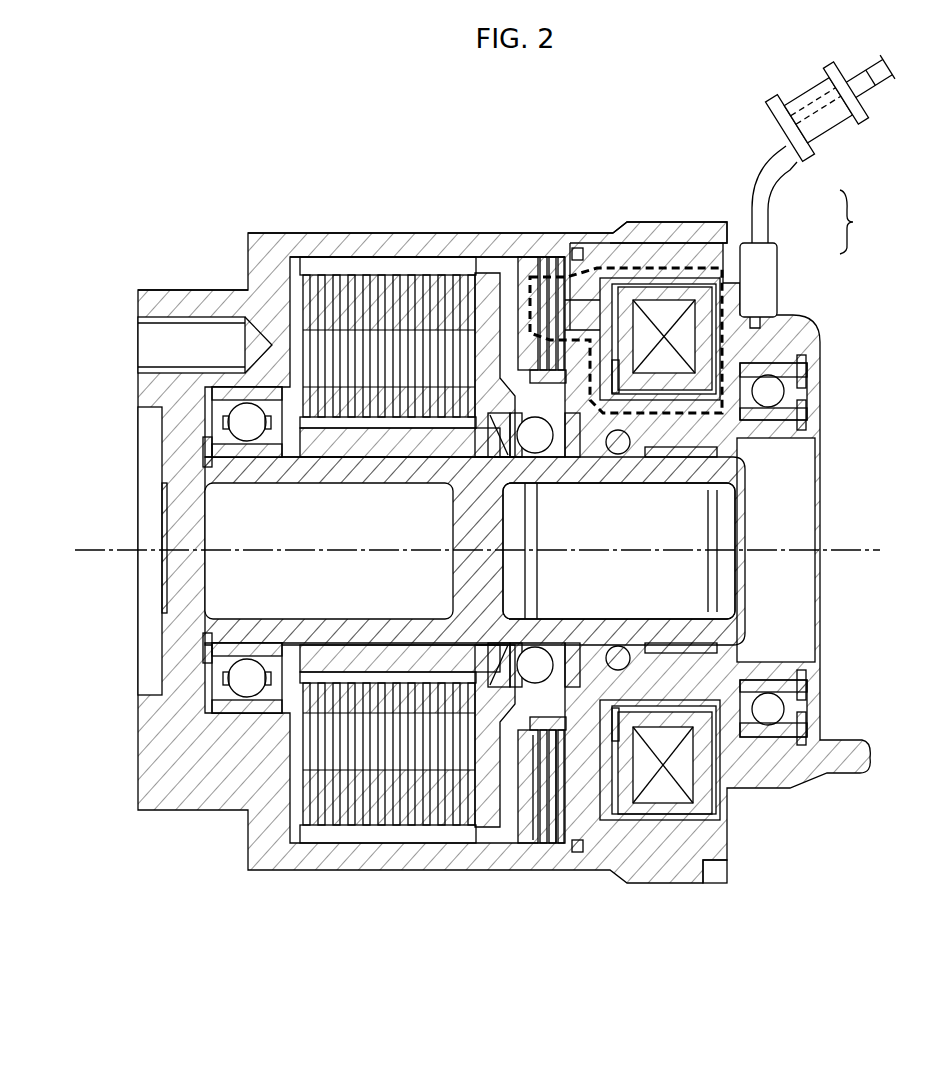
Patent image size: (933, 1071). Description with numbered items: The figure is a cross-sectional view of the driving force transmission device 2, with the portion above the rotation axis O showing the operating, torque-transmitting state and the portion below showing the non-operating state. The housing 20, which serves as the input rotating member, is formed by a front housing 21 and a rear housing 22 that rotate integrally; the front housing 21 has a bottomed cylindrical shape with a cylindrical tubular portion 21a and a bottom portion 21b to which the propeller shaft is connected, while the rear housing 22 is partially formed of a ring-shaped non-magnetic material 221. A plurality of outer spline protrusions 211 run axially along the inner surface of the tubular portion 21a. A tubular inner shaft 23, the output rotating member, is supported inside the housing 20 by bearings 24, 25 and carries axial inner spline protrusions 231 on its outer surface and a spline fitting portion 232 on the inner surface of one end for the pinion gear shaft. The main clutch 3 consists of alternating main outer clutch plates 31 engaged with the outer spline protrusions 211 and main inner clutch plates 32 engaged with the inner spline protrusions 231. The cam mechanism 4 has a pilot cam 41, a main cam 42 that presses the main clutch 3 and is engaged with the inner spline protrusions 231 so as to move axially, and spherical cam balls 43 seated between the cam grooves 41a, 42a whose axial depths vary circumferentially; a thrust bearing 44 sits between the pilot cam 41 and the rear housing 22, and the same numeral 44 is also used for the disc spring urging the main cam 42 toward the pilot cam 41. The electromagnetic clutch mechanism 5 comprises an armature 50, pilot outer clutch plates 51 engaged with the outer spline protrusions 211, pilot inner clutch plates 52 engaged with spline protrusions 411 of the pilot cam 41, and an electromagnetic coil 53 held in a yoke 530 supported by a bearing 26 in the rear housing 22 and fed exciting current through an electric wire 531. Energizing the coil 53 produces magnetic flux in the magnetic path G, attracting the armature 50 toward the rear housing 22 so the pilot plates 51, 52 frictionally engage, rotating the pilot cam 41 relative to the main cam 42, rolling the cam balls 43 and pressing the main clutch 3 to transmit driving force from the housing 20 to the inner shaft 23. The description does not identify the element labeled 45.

The driving force transmission device 2 is at (136, 160).
The main clutch 3 is at (318, 520).
The cam mechanism 4 is at (488, 265).
The electromagnetic clutch mechanism 5 is at (532, 258).
The housing 20 is at (860, 222).
The front housing 21 is at (730, 229).
The tubular portion 21a is at (348, 242).
The bottom portion 21b is at (160, 306).
The rear housing 22 is at (722, 262).
The inner shaft 23 is at (728, 480).
The bearing 24 is at (222, 450).
The bearing 25 is at (692, 460).
The bearing 26 is at (776, 390).
The main outer clutch plate 31 is at (300, 297).
The main inner clutch plate 32 is at (303, 318).
The pilot cam 41 is at (582, 445).
The cam groove 41a is at (570, 460).
The main cam 42 is at (487, 403).
The cam groove 42a is at (520, 455).
The cam ball 43 is at (540, 448).
The thrust bearing 44 is at (573, 667).
The inclined cam surface 45 is at (497, 455).
The armature 50 is at (530, 818).
The pilot outer clutch plate 51 is at (577, 852).
The pilot inner clutch plate 52 is at (557, 813).
The electromagnetic coil 53 is at (683, 327).
The outer spline protrusion 211 is at (398, 256).
The non-magnetic material 221 is at (573, 307).
The inner spline protrusion 231 is at (365, 680).
The spline fitting portion 232 is at (648, 620).
The spline protrusion 411 is at (533, 732).
The yoke 530 is at (807, 346).
The electric wire 531 is at (770, 170).
The magnetic path G is at (673, 267).
The rotation axis O is at (873, 548).